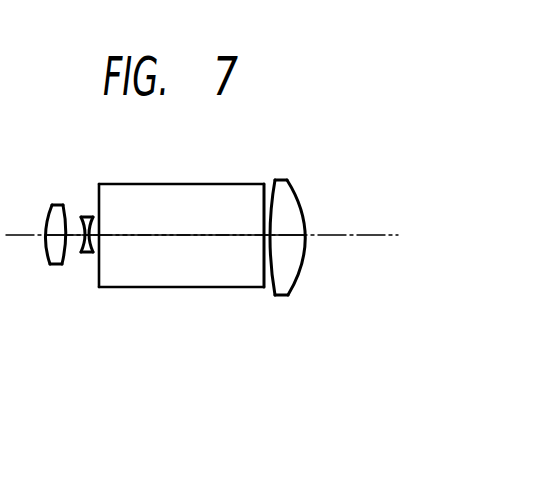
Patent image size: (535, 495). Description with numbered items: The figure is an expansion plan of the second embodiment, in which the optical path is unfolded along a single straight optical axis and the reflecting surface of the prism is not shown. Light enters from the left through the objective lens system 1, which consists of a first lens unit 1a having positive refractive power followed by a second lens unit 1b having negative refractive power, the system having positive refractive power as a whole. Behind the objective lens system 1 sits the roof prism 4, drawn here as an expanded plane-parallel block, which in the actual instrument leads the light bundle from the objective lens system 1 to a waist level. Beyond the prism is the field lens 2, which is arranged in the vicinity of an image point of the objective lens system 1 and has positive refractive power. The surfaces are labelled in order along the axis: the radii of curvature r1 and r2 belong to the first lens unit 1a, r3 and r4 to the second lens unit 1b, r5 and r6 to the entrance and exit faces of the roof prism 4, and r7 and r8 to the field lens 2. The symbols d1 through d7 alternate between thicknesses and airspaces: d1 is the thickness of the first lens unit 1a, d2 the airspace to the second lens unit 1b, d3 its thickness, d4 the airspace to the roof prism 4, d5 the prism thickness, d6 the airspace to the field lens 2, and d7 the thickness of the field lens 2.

The objective lens system 1 is at (98, 389).
The first lens unit 1a is at (57, 266).
The second lens unit 1b is at (82, 253).
The field lens 2 is at (280, 294).
The roof prism 4 is at (172, 184).
The radius of curvature r1 is at (50, 216).
The radius of curvature r2 is at (66, 205).
The radius of curvature r3 is at (83, 218).
The radius of curvature r4 is at (95, 224).
The radius of curvature r5 is at (99, 184).
The radius of curvature r6 is at (264, 185).
The radius of curvature r7 is at (277, 180).
The radius of curvature r8 is at (293, 183).
The thickness d1 is at (55, 236).
The airspace d2 is at (75, 238).
The thickness d3 is at (86, 252).
The airspace d4 is at (97, 238).
The thickness d5 is at (192, 238).
The airspace d6 is at (266, 238).
The thickness d7 is at (289, 238).